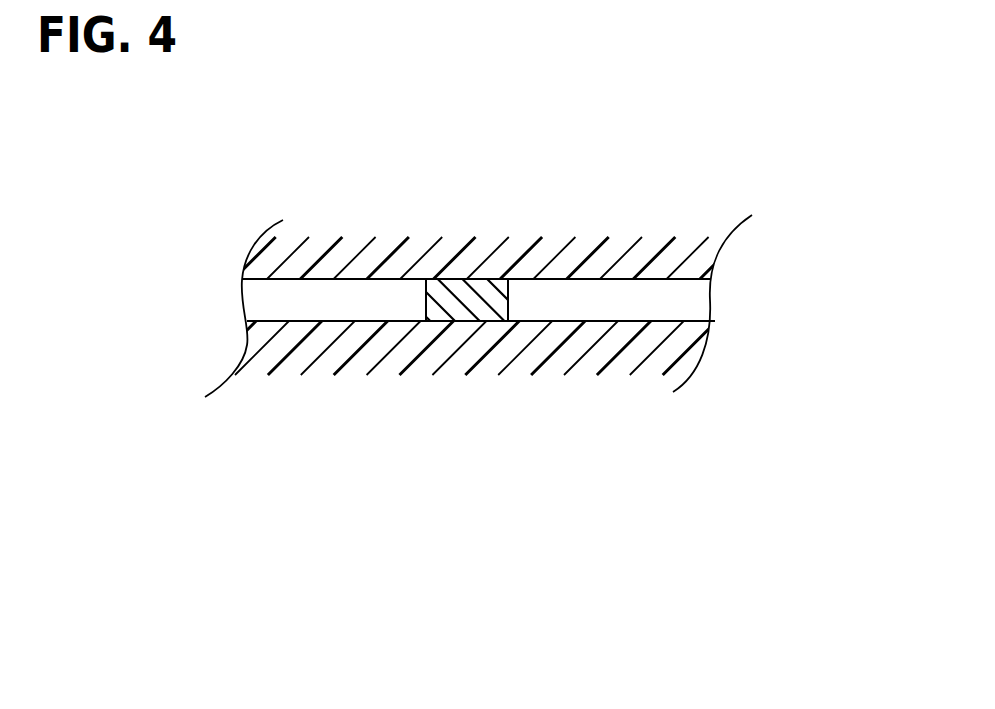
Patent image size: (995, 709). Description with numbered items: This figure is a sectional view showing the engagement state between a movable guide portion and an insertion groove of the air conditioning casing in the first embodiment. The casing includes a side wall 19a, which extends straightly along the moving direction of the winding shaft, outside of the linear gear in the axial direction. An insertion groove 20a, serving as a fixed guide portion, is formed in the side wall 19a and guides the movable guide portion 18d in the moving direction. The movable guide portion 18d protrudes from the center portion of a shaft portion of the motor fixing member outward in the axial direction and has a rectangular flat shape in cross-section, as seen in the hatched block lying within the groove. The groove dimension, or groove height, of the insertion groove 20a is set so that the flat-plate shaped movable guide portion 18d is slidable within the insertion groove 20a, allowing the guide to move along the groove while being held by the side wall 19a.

The side wall 19a is at (576, 246).
The insertion groove 20a is at (655, 298).
The movable guide portion 18d is at (510, 293).